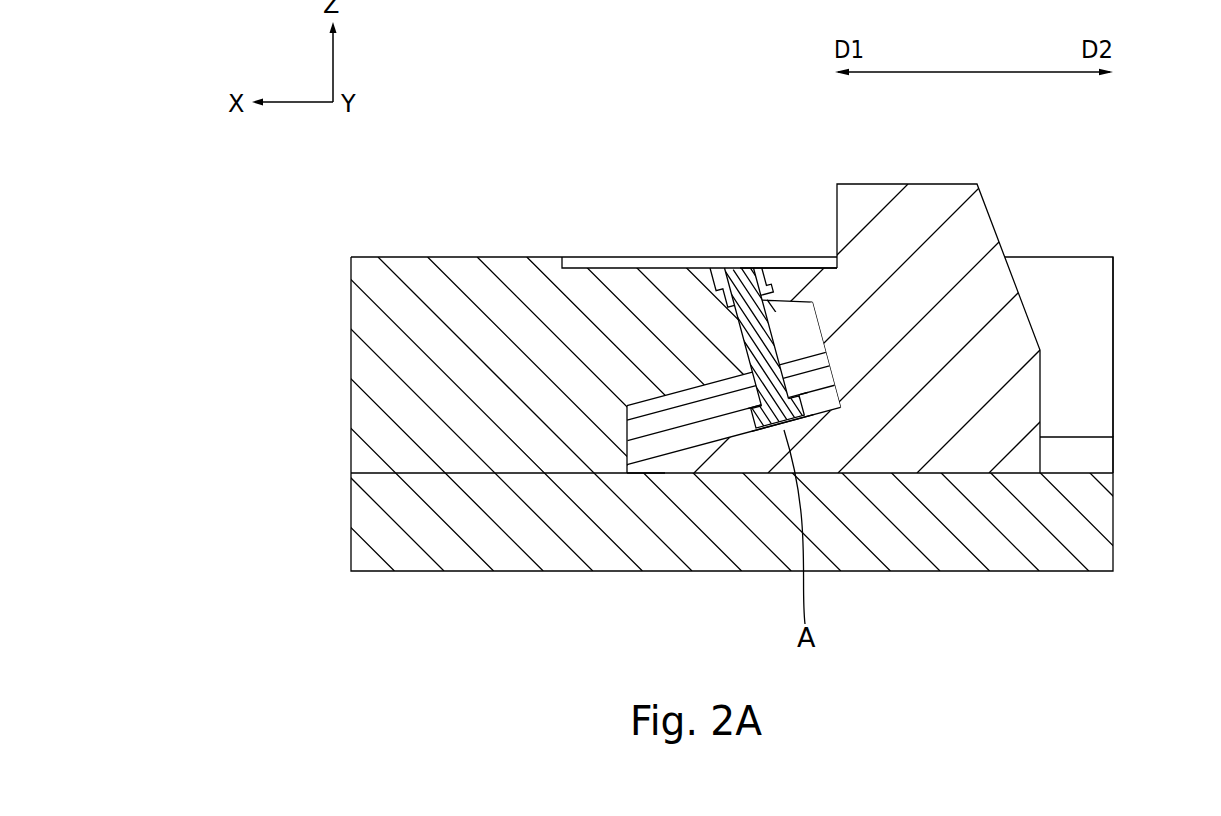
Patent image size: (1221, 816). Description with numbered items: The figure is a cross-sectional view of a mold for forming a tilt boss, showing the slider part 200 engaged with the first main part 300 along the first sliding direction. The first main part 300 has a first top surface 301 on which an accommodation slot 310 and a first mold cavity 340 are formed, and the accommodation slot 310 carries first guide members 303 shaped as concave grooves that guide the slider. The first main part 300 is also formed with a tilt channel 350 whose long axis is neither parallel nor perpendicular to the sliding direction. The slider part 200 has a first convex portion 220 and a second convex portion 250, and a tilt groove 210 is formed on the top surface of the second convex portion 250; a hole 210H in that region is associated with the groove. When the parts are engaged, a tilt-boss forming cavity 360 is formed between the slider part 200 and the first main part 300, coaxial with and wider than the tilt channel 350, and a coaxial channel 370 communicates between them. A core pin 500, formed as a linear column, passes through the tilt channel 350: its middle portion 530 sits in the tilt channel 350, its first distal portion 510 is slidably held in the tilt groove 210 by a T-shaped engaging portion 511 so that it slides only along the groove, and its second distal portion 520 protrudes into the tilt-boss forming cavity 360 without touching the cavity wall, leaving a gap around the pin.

The slider part 200 is at (998, 217).
The tilt groove 210 is at (687, 466).
The hole of plate 210H is at (795, 430).
The first convex portion 220 is at (815, 260).
The second convex portion 250 is at (641, 485).
The first main part 300 is at (348, 254).
The first top surface 301 is at (398, 256).
The first guide members 303 is at (1113, 455).
The accommodation slot 310 is at (1094, 343).
The first mold cavity 340 is at (578, 268).
The tilt channel 350 is at (812, 302).
The tilt-boss forming cavity 360 is at (757, 260).
The coaxial channel 370 is at (768, 290).
The core pin 500 is at (900, 404).
The first distal portion 510 is at (769, 450).
The engaging portion 511 is at (805, 425).
The second distal portion 520 is at (740, 265).
The middle portion 530 is at (732, 326).